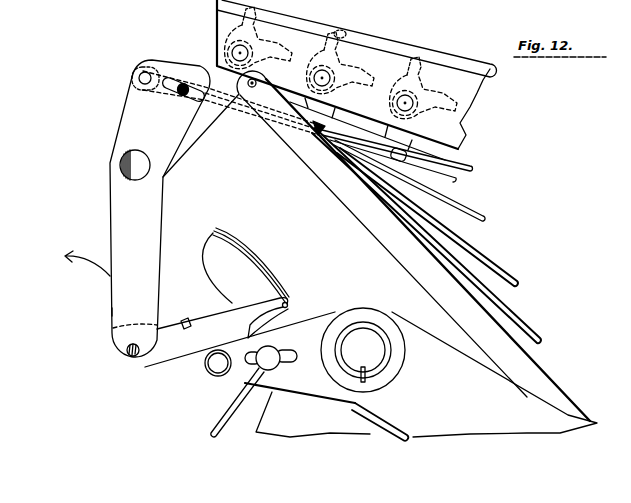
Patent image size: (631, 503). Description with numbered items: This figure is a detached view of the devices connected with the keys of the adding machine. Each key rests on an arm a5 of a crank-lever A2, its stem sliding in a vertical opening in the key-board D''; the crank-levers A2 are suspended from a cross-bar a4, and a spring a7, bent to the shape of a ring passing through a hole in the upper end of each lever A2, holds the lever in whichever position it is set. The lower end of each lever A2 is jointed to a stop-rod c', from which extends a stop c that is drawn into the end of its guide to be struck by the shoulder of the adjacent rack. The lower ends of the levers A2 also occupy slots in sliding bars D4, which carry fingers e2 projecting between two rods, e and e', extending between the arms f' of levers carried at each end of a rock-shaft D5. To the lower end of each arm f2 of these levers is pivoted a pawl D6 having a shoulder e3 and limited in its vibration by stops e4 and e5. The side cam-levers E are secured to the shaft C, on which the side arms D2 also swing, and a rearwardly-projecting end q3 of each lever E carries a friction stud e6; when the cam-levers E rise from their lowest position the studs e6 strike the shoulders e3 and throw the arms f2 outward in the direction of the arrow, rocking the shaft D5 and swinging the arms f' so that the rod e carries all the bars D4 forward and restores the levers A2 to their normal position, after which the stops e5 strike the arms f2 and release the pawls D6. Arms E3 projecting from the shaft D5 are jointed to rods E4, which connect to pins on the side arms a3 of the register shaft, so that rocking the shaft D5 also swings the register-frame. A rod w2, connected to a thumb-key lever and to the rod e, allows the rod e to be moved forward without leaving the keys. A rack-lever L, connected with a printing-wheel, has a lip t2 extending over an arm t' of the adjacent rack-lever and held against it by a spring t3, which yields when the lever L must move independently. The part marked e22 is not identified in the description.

The crank-lever A2 is at (462, 147).
The key-board D'' is at (357, 38).
The cross-bar a4 is at (231, 53).
The arm of crank-lever a5 is at (486, 116).
The spring a7 is at (248, 20).
The side arm of register-frame a3 is at (346, 34).
The bar D4 is at (203, 66).
The rod w2 is at (134, 72).
The lever head lug e22 is at (128, 77).
The stop c is at (117, 96).
The finger of bar e2 is at (173, 93).
The rod e' is at (200, 106).
The arm of rock-shaft lever f' is at (171, 96).
The arm of rock-shaft lever f2 is at (134, 217).
The rock-shaft D5 is at (136, 172).
The arm E3 is at (210, 135).
The rod E4 is at (408, 268).
The stop e5 is at (111, 313).
The stop e4 is at (194, 325).
The pawl D6 is at (180, 350).
The shoulder of pawl e3 is at (252, 322).
The arm of rack-lever t' is at (221, 268).
The spring t3 is at (236, 250).
The lip t2 is at (258, 262).
The shaft C is at (363, 350).
The side lever (cam-lever) E is at (494, 374).
The rearwardly-projecting end of cam-lever q3 is at (255, 391).
The friction stud e6 is at (216, 376).
The rack-lever L is at (307, 410).
The side arm D2 is at (392, 433).
The stop-rod c' is at (409, 186).